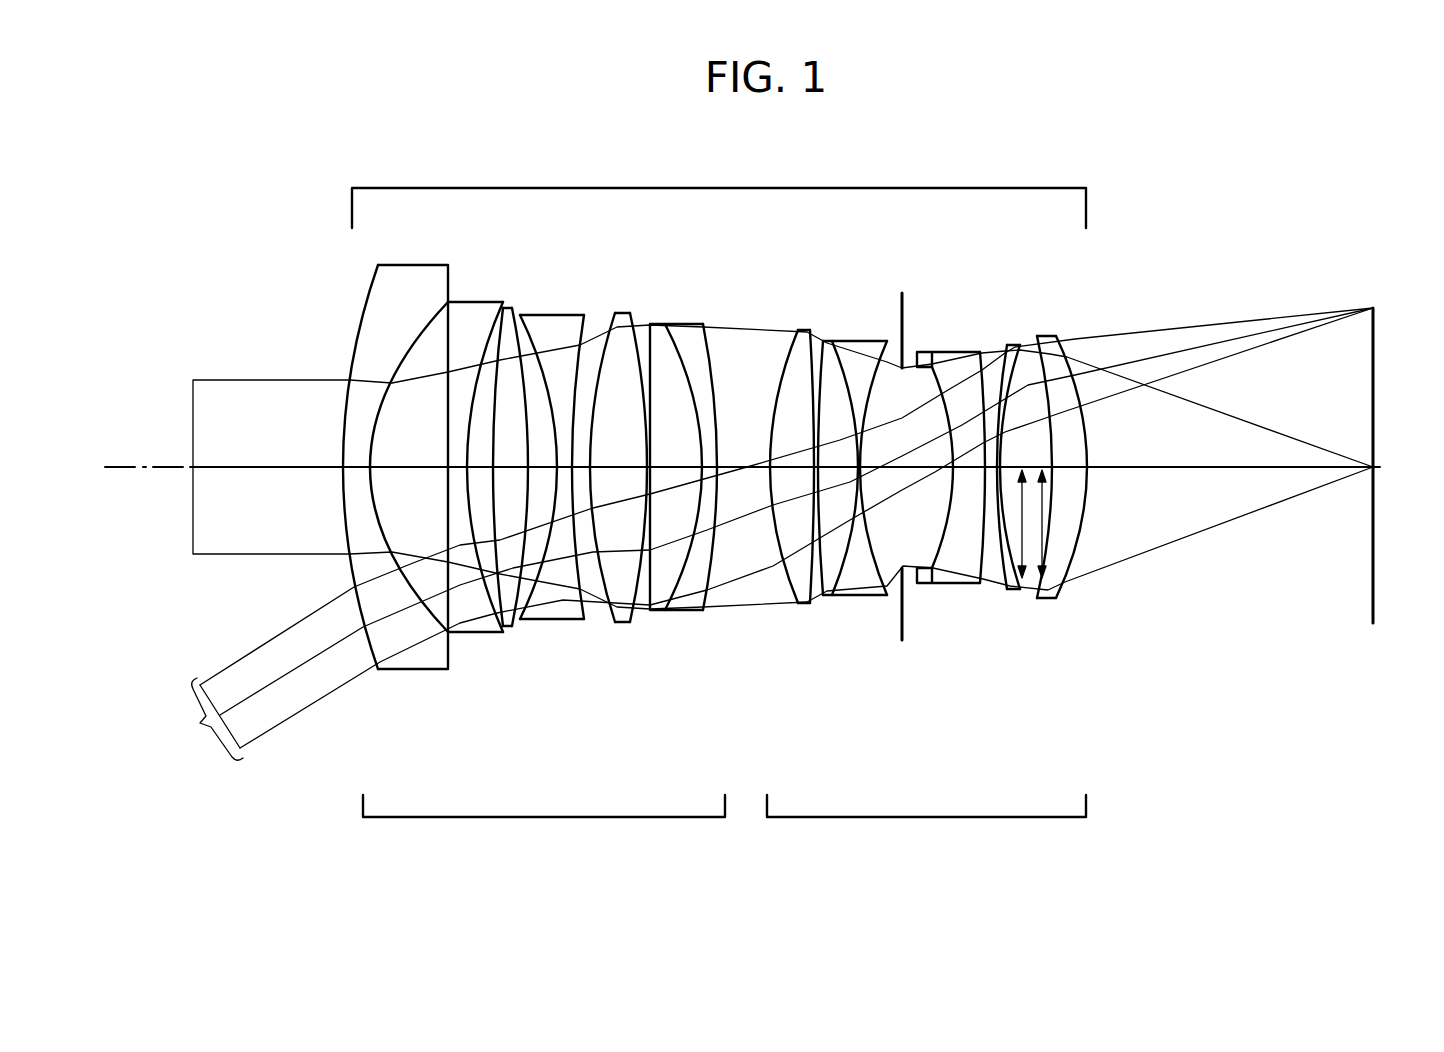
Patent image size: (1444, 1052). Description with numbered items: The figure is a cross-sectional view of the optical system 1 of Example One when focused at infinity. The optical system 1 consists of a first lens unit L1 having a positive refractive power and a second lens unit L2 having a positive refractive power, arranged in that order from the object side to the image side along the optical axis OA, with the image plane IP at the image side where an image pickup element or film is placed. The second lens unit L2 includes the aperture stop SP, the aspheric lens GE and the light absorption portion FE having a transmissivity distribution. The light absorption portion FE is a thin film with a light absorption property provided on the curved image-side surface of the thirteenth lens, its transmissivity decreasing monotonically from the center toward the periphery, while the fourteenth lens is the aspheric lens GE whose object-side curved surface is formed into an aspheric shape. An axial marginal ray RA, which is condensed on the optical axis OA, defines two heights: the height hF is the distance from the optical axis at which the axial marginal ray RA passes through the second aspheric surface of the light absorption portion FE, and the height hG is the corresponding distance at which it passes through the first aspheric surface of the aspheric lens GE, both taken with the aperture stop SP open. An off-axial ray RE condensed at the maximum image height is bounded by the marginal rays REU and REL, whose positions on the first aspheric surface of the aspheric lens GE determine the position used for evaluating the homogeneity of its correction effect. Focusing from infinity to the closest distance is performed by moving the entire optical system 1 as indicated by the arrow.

The optical system 1 is at (719, 190).
The optical axis OA is at (268, 463).
The axial marginal ray RA is at (200, 554).
The off-axial ray RE is at (769, 534).
The marginal ray REU is at (237, 660).
The marginal ray REL is at (340, 684).
The first lens unit L1 is at (615, 561).
The second lens unit L2 is at (962, 599).
The aperture stop SP is at (898, 327).
The light absorption portion FE is at (1013, 343).
The aspheric lens GE is at (1048, 598).
The height hF is at (1015, 545).
The height hG is at (1047, 517).
The image plane IP is at (1376, 323).